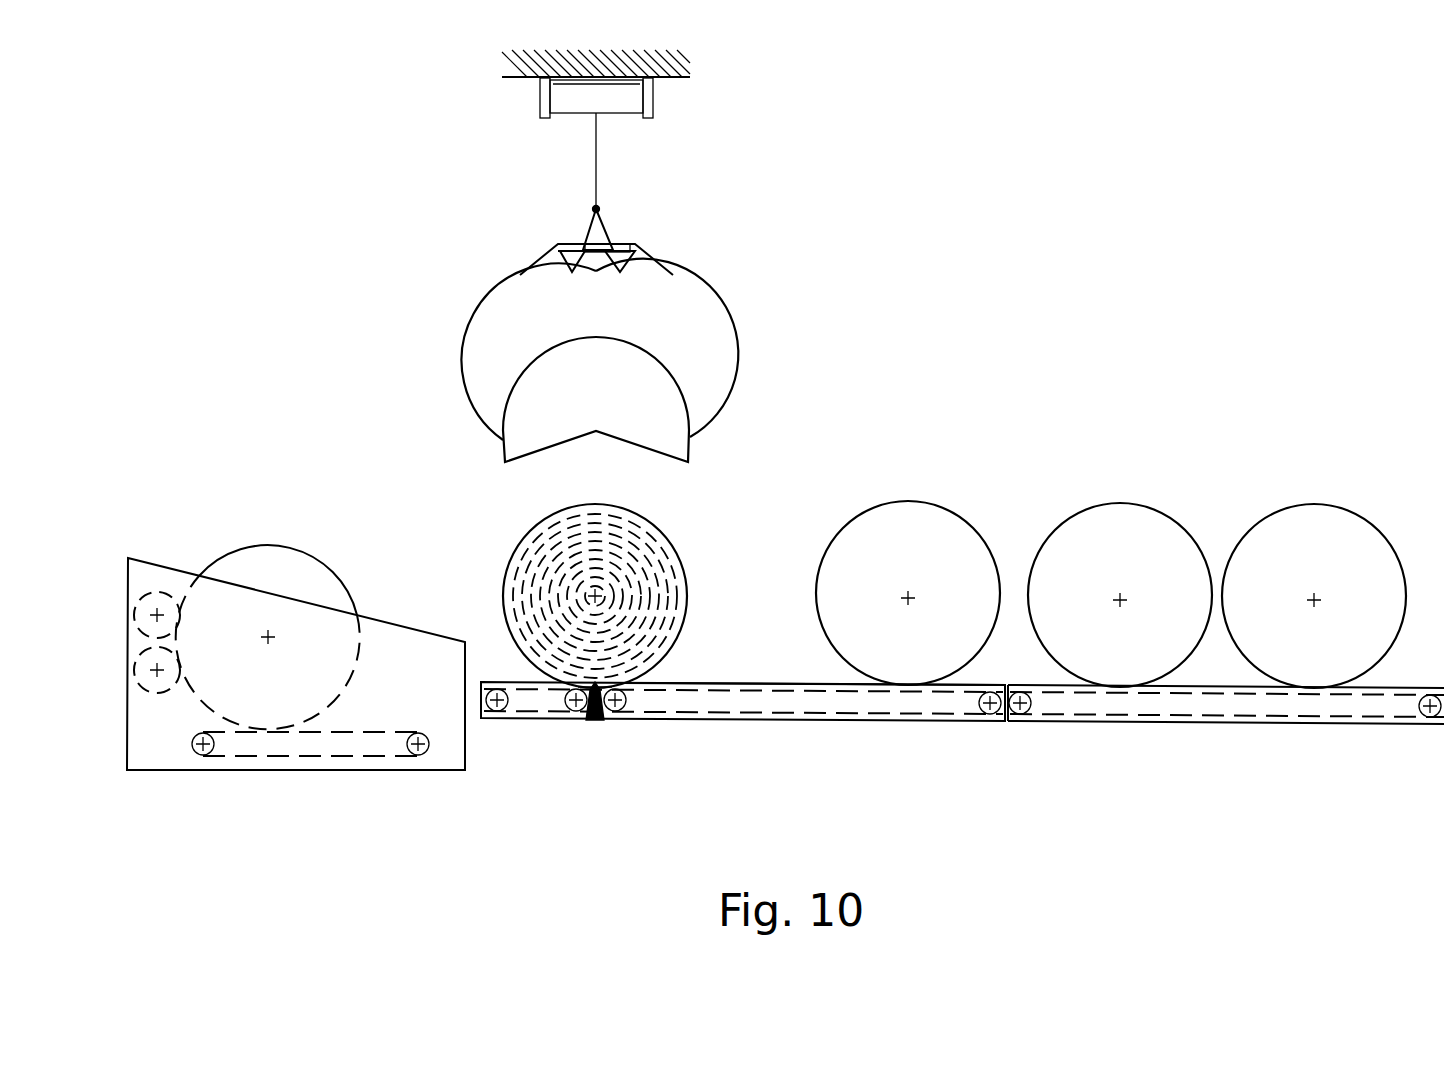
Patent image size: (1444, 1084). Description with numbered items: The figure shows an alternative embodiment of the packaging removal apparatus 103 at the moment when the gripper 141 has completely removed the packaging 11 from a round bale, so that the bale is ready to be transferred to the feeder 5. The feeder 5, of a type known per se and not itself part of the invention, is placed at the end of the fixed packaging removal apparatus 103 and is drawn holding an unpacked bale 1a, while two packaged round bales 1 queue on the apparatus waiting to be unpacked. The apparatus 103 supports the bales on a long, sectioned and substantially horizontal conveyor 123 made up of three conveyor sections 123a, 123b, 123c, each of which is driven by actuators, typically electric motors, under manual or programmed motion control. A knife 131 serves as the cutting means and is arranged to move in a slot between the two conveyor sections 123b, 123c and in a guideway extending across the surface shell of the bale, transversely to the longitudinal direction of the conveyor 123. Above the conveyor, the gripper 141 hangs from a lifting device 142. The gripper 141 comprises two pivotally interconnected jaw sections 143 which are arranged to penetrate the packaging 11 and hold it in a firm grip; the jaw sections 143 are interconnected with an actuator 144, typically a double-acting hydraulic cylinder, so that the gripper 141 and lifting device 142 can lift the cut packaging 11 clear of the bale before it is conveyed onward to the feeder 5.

The packaged round bale 1 is at (955, 512).
The unpacked bale 1a is at (503, 566).
The feeder 5 is at (250, 501).
The packaging 11 is at (660, 452).
The packaging removal apparatus 103 is at (1063, 358).
The conveyor 123 is at (808, 683).
The conveyor section 123a is at (1170, 724).
The conveyor section 123b is at (757, 723).
The conveyor section 123c is at (533, 720).
The knife 131 is at (607, 719).
The gripper 141 is at (525, 270).
The lifting device 142 is at (655, 116).
The jaw section 143 is at (462, 350).
The actuator 144 is at (612, 243).